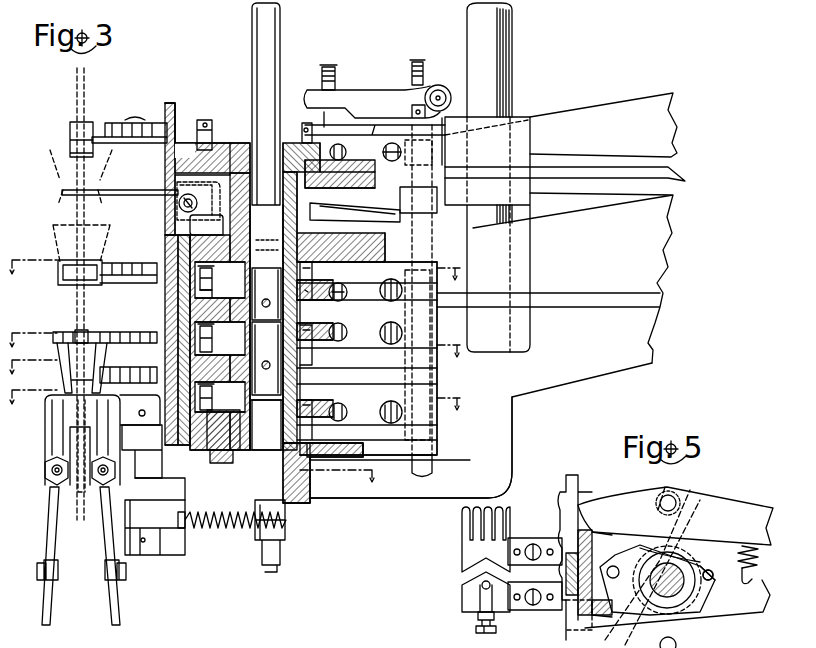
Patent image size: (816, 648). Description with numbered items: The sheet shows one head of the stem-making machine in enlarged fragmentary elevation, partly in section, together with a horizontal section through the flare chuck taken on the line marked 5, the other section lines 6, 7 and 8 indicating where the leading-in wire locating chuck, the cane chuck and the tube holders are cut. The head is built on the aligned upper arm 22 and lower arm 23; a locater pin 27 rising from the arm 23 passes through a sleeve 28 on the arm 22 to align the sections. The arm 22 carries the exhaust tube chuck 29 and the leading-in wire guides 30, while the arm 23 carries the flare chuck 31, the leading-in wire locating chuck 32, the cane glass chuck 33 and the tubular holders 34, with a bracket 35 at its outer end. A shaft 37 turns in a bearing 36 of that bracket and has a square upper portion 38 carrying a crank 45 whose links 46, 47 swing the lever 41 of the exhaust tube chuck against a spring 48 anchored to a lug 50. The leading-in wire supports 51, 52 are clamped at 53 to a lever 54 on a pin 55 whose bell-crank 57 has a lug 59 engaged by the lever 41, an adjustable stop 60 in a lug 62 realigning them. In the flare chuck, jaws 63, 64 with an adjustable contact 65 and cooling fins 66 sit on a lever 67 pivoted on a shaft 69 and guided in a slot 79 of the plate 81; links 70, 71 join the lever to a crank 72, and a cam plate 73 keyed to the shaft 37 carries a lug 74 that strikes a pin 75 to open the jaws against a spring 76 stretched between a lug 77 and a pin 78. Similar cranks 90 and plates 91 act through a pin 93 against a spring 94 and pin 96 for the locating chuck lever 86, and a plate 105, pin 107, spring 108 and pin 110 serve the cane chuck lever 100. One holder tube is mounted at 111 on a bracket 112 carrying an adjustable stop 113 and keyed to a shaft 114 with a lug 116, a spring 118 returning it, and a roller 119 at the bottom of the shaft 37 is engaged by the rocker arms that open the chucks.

In FIG. 3, the arm 22 is at (600, 110).
In FIG. 3, the arm 23 is at (682, 198).
In FIG. 3, the locater pin 27 is at (510, 80).
In FIG. 3, the sleeve 28 is at (528, 118).
In FIG. 3, the exhaust tube chuck 29 is at (70, 126).
In FIG. 3, the leading-in wire guides 30 is at (62, 192).
In FIG. 3, the flare chuck 31 is at (58, 284).
In FIG. 3, the leading-in wire locating chuck 32 is at (55, 333).
In FIG. 3, the cane glass chuck 33 is at (60, 378).
In FIG. 3, the tubular holders 34 is at (46, 422).
In FIG. 3, the bracket 35 is at (410, 490).
In FIG. 3, the bearing 36 is at (305, 487).
In FIG. 3, the shaft 37 is at (248, 430).
In FIG. 5, the shaft 37 is at (664, 598).
In FIG. 3, the upper portion of shaft 38 is at (253, 78).
In FIG. 3, the lever 41 is at (160, 122).
In FIG. 3, the crank 45 is at (242, 140).
In FIG. 3, the link 46 is at (203, 122).
In FIG. 3, the link 47 is at (300, 125).
In FIG. 3, the spring 48 is at (347, 152).
In FIG. 3, the lug 50 is at (384, 160).
In FIG. 3, the leading-in wire support 51 is at (58, 152).
In FIG. 3, the leading-in wire support 52 is at (113, 195).
In FIG. 3, the clamp 53 is at (203, 213).
In FIG. 3, the lever 54 is at (348, 212).
In FIG. 3, the pin 55 is at (428, 60).
In FIG. 3, the bell-crank 57 is at (366, 96).
In FIG. 3, the lug 59 is at (334, 122).
In FIG. 3, the adjustable stop 60 is at (179, 204).
In FIG. 3, the lug 62 is at (177, 185).
In FIG. 5, the jaw 63 is at (462, 556).
In FIG. 5, the jaw 64 is at (462, 594).
In FIG. 5, the adjustable contact 65 is at (476, 627).
In FIG. 5, the cooling fins 66 is at (512, 522).
In FIG. 5, the lever 67 is at (607, 500).
In FIG. 3, the shaft 69 is at (425, 318).
In FIG. 3, the link 70 is at (200, 280).
In FIG. 5, the link 70 is at (618, 550).
In FIG. 3, the link 71 is at (346, 290).
In FIG. 5, the link 71 is at (700, 607).
In FIG. 3, the crank 72 is at (220, 295).
In FIG. 5, the crank 72 is at (643, 588).
In FIG. 3, the cam plate 73 is at (248, 304).
In FIG. 5, the cam plate 73 is at (700, 560).
In FIG. 5, the lug 74 is at (692, 546).
In FIG. 3, the pin 75 is at (315, 304).
In FIG. 5, the pin 75 is at (716, 570).
In FIG. 3, the spring 76 is at (380, 297).
In FIG. 5, the spring 76 is at (760, 559).
In FIG. 5, the lug 77 is at (750, 583).
In FIG. 3, the pin 78 is at (390, 300).
In FIG. 5, the guide slot 79 is at (566, 483).
In FIG. 5, the vertically disposed plate 81 is at (566, 576).
In FIG. 3, the lever 86 is at (353, 352).
In FIG. 3, the crank 90 is at (238, 356).
In FIG. 3, the plate 91 is at (248, 368).
In FIG. 3, the pin 93 is at (314, 368).
In FIG. 3, the spring 94 is at (347, 330).
In FIG. 3, the pin 96 is at (394, 344).
In FIG. 3, the lever 100 is at (196, 388).
In FIG. 3, the plate 105 is at (300, 435).
In FIG. 3, the pin 107 is at (313, 420).
In FIG. 3, the spring 108 is at (352, 410).
In FIG. 3, the pin 110 is at (392, 415).
In FIG. 3, the detachable mounting 111 is at (45, 476).
In FIG. 3, the bracket 112 is at (48, 440).
In FIG. 3, the adjustable stop 113 is at (97, 487).
In FIG. 3, the shaft 114 is at (142, 556).
In FIG. 3, the lug 116 is at (178, 556).
In FIG. 3, the spring 118 is at (216, 528).
In FIG. 3, the roller 119 is at (286, 553).
In FIG. 3, the section line 5— 5 is at (234, 277).
In FIG. 3, the section line 6— 6 is at (234, 352).
In FIG. 3, the section line 7— 7 is at (234, 391).
In FIG. 3, the section line 8— 8 is at (192, 443).